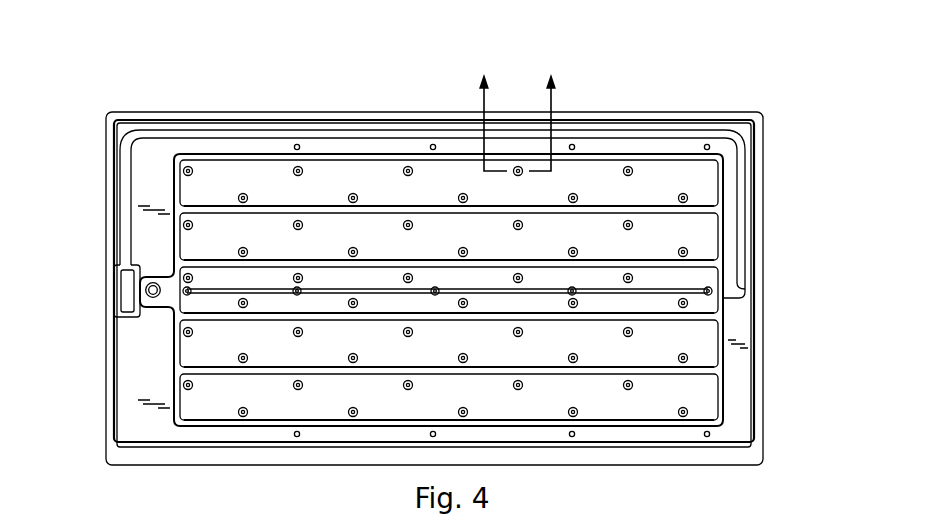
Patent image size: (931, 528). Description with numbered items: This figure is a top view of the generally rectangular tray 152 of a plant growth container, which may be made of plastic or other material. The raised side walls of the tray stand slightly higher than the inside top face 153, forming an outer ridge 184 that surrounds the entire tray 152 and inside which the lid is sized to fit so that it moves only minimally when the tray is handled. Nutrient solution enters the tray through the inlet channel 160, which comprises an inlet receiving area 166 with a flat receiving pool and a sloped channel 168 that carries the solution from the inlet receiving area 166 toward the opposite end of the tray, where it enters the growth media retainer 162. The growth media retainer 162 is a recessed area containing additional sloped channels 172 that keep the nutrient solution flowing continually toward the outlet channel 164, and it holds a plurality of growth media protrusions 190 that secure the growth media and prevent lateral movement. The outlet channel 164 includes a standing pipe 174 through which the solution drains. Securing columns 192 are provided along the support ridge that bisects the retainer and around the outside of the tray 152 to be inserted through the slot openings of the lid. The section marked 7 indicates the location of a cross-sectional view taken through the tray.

The tray 152 is at (692, 112).
The inside top face 153 is at (148, 142).
The inlet channel 160 is at (121, 262).
The growth media retainer 162 is at (610, 349).
The outlet channel 164 is at (167, 282).
The inlet receiving area 166 is at (125, 296).
The sloped channel 168 is at (400, 133).
The sloped channels 172 is at (703, 207).
The standing pipe 174 is at (152, 298).
The outer ridge 184 is at (618, 113).
The growth media protrusions 190 is at (305, 169).
The securing columns 192 is at (295, 146).
The section line 7- 7 is at (517, 110).